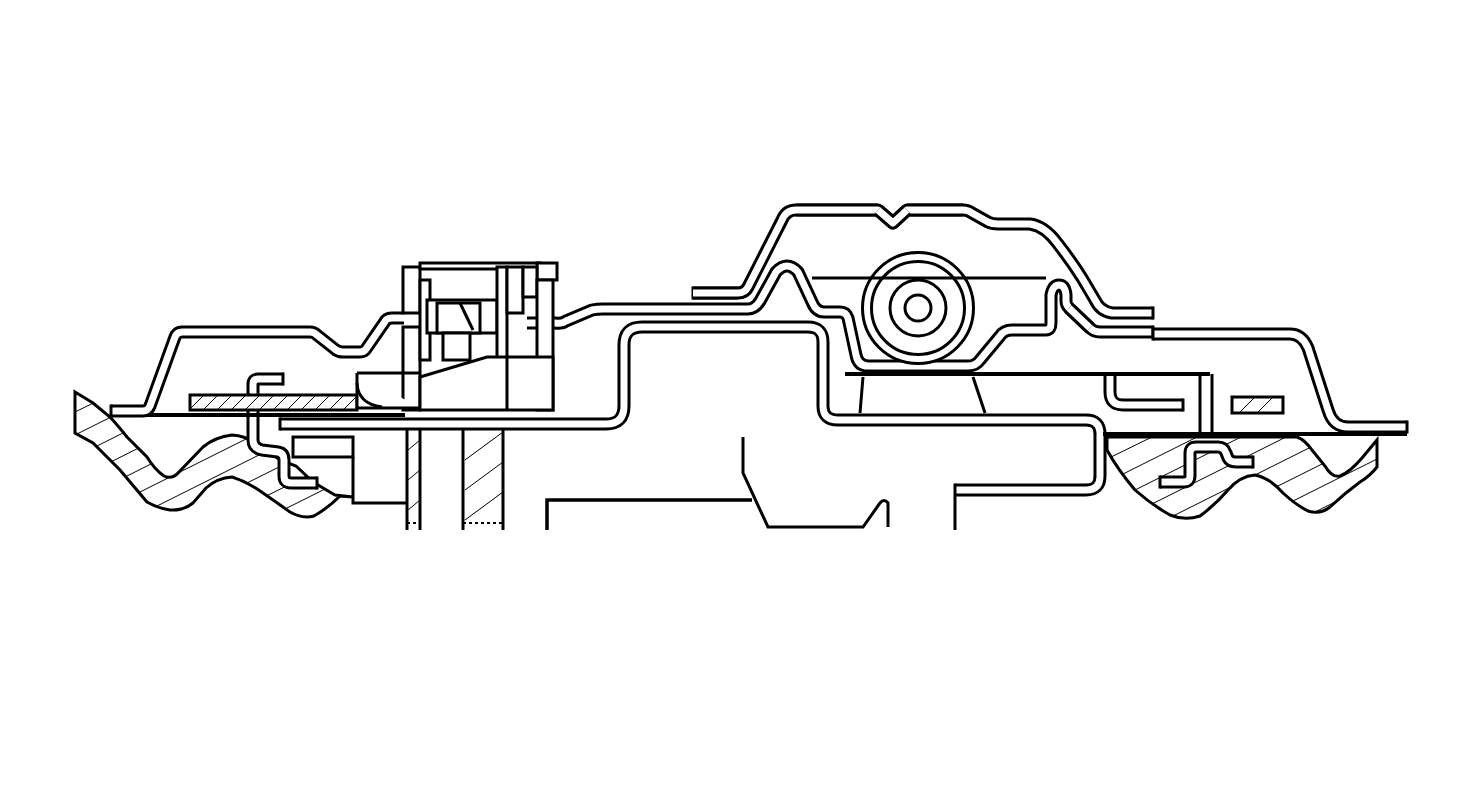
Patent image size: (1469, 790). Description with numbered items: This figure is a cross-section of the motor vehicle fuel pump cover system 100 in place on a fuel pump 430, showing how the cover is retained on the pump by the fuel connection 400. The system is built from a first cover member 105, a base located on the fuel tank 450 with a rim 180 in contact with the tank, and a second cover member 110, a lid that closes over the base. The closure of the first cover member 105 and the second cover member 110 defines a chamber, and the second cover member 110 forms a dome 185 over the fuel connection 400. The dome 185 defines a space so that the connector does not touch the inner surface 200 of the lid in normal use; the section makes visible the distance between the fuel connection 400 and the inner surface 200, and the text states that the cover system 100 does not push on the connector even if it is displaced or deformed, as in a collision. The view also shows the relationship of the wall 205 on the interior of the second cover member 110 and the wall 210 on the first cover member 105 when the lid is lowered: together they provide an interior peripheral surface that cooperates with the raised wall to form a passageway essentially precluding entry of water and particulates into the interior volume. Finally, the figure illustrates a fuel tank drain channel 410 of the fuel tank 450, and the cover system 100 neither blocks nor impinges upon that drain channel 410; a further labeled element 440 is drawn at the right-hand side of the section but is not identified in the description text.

The motor vehicle fuel pump cover system 100 is at (283, 170).
The first cover member 105 is at (1338, 398).
The second cover member 110 is at (1082, 245).
The rim 180 is at (112, 404).
The dome 185 is at (996, 214).
The inner surface 200 is at (883, 214).
The wall 205 is at (744, 285).
The wall 210 is at (712, 305).
The fuel connection 400 is at (914, 280).
The fuel tank drain channel 410 is at (170, 443).
The fuel pump 430 is at (640, 458).
The right seal 440 is at (1410, 432).
The fuel tank 450 is at (243, 461).